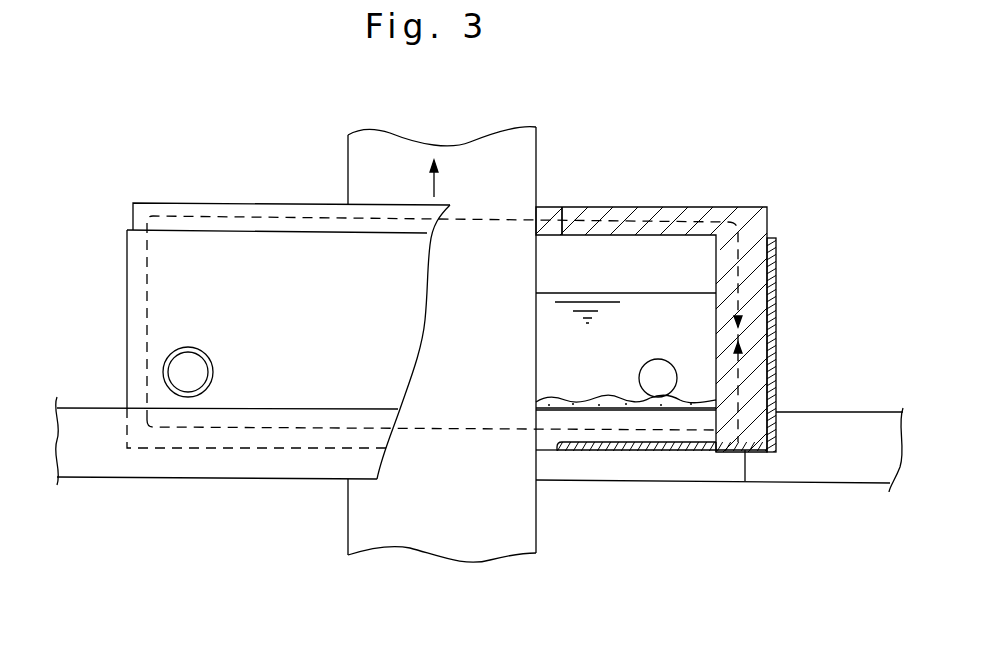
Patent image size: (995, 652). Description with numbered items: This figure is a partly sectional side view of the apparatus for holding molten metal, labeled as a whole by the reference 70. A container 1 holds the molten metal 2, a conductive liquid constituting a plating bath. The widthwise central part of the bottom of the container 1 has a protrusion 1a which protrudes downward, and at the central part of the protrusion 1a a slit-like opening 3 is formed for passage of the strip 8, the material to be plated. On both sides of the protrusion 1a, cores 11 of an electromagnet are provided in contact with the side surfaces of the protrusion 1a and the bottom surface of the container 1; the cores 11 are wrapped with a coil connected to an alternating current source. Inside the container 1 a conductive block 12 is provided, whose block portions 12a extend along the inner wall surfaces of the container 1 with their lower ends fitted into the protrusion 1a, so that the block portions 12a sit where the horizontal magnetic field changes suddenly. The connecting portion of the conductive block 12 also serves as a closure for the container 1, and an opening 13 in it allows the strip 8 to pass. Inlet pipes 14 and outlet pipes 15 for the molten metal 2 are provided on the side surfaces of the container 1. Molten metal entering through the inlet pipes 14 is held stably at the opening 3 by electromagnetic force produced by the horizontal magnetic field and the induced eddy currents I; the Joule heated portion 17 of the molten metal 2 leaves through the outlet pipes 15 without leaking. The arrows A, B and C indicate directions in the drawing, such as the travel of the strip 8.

The container 1 is at (120, 273).
The protrusion 1a is at (617, 452).
The molten metal 2 is at (655, 313).
The slit-like opening 3 is at (551, 451).
The strip 8 is at (518, 155).
The cores 11 is at (121, 460).
The conductive block 12 is at (228, 203).
The block portions 12a is at (752, 405).
The opening 13 is at (564, 207).
The inlet pipes 14 is at (163, 367).
The outlet pipes 15 is at (677, 378).
The Joule heated portion 17 is at (593, 396).
The duct assembly 70 is at (830, 141).
The direction A is at (835, 373).
The direction B is at (214, 507).
The direction C is at (645, 176).
The induced eddy currents I is at (746, 284).